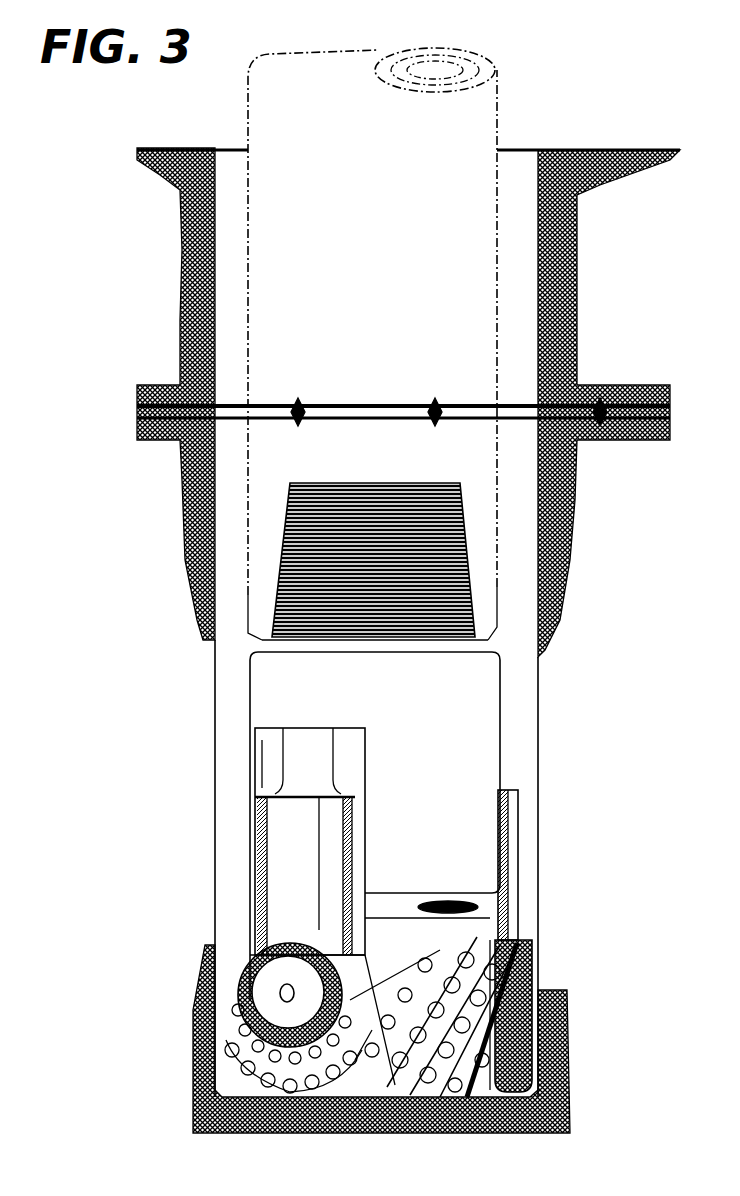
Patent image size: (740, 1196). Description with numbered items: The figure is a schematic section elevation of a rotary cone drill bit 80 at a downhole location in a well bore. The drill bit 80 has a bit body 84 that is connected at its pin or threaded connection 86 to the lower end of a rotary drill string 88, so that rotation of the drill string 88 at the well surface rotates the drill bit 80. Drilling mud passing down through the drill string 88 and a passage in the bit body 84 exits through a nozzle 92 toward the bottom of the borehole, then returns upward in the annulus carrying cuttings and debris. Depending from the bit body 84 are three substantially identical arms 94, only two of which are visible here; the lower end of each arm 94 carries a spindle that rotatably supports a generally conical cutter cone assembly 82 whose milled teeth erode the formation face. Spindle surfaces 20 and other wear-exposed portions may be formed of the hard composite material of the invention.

The spindle surfaces 20 is at (300, 948).
The drill bit 80 is at (520, 705).
The cutter cone assembly 82 is at (552, 1052).
The bit body 84 is at (478, 733).
The threaded connection 86 is at (462, 505).
The rotary drill string 88 is at (500, 178).
The nozzle 92 is at (470, 893).
The arms 94 is at (285, 843).